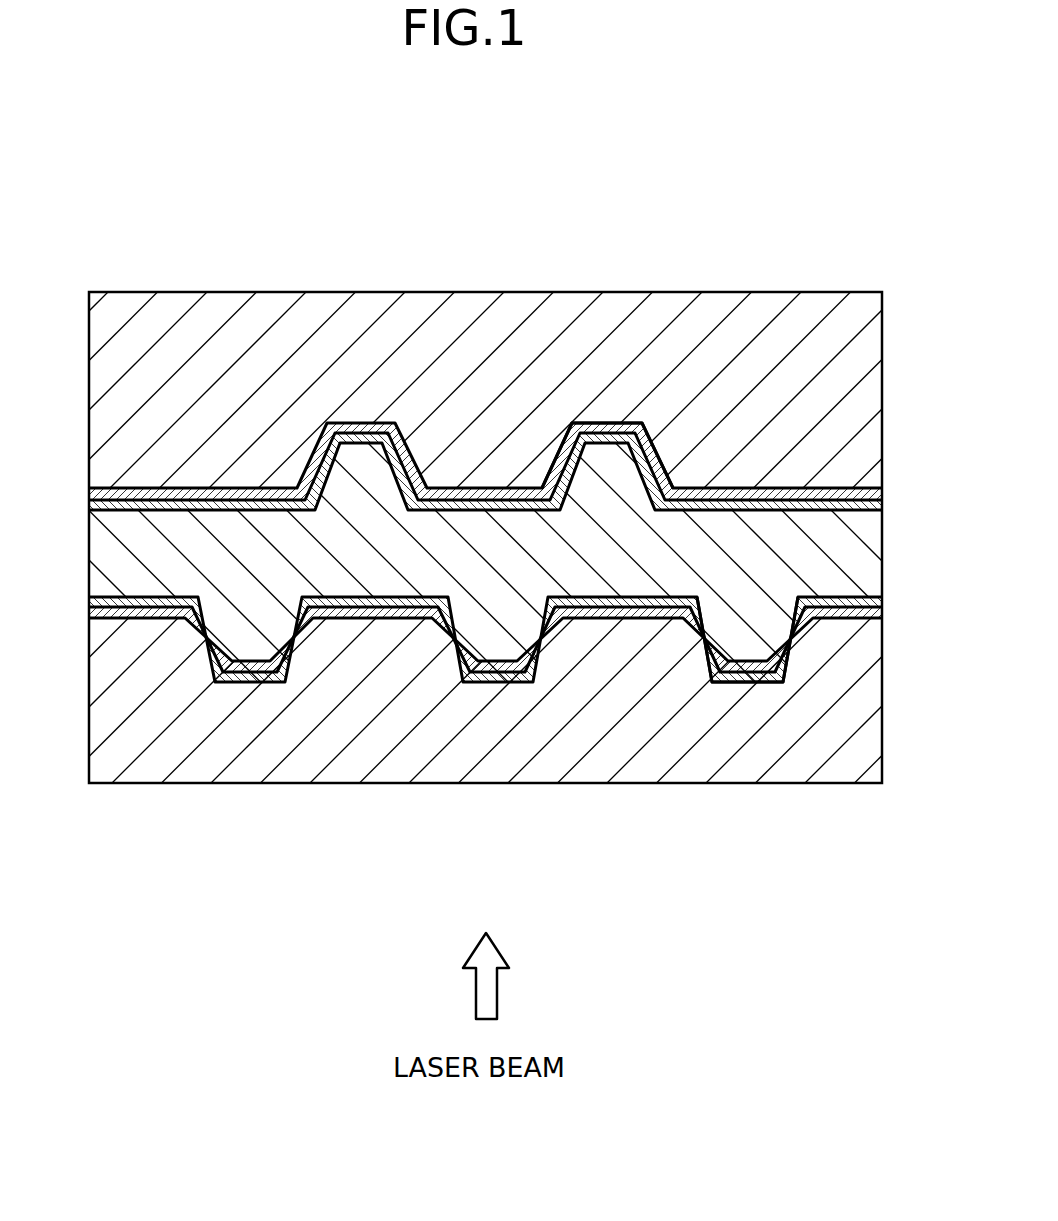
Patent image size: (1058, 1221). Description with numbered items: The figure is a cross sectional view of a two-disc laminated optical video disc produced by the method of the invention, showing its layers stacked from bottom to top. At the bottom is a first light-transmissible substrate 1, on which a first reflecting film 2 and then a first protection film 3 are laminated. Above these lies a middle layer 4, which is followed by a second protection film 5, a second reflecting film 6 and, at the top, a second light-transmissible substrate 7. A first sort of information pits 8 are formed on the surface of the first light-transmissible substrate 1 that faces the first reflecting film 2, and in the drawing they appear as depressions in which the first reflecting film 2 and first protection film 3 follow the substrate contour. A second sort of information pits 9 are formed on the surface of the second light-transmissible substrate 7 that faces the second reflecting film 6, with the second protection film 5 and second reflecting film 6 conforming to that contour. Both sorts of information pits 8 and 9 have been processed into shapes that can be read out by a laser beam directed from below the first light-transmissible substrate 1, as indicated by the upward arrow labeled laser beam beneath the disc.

The first light-transmissible substrate 1 is at (862, 688).
The first reflecting film 2 is at (880, 612).
The first protection film 3 is at (880, 602).
The middle layer 4 is at (865, 533).
The second protection film 5 is at (880, 486).
The second reflecting film 6 is at (828, 487).
The second light-transmissible substrate 7 is at (857, 342).
The first sort of information pits 8 is at (743, 683).
The second sort of information pits 9 is at (617, 422).